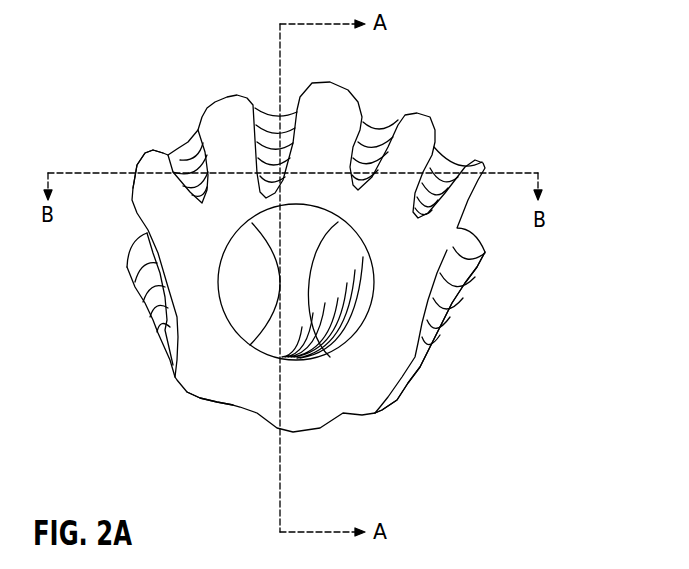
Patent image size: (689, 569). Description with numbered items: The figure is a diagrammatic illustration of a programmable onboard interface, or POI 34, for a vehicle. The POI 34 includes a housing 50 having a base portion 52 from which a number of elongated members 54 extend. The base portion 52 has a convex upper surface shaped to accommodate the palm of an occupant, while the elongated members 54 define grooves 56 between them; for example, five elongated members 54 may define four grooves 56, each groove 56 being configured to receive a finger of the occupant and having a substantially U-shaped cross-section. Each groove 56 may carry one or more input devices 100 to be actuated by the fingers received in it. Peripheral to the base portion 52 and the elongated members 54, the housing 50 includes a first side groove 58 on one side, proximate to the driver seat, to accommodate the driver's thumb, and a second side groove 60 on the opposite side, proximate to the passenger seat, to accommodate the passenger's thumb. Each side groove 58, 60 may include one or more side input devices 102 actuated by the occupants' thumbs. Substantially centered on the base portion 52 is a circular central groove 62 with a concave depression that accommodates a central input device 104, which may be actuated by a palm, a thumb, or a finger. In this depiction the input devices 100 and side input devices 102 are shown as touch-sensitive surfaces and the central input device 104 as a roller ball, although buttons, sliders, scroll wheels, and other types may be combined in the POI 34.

The programmable onboard interface 34 is at (133, 360).
The housing 50 is at (400, 325).
The base portion 52 is at (222, 370).
The elongated members 54 is at (173, 212).
The grooves 56 is at (448, 135).
The first side groove 58 is at (126, 240).
The second side groove 60 is at (481, 230).
The central groove 62 is at (264, 371).
The input devices 100 is at (265, 115).
The side input devices 102 is at (155, 300).
The central input device 104 is at (308, 340).